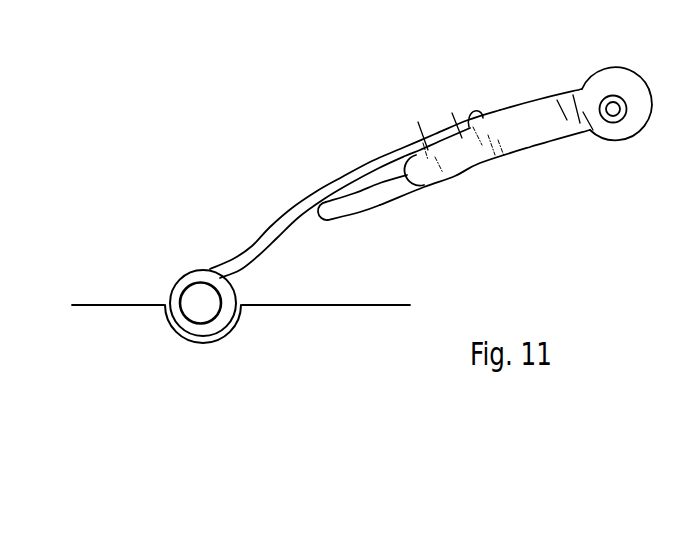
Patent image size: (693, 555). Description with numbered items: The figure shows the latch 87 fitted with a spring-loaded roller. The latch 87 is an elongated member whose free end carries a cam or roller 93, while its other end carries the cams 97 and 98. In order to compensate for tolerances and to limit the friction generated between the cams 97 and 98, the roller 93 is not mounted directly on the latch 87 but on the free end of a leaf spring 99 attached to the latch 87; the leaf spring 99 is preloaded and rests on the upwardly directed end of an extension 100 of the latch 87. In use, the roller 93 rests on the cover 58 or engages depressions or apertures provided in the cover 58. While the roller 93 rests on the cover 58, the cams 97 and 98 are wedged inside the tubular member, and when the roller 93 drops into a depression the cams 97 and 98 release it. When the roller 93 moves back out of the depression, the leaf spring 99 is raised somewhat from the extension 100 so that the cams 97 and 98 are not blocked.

The cover 58 is at (341, 311).
The latch 87 is at (515, 130).
The roller 93 is at (217, 318).
The cam 97 is at (614, 88).
The cam 98 is at (633, 133).
The leaf spring 99 is at (372, 161).
The extension 100 is at (378, 204).